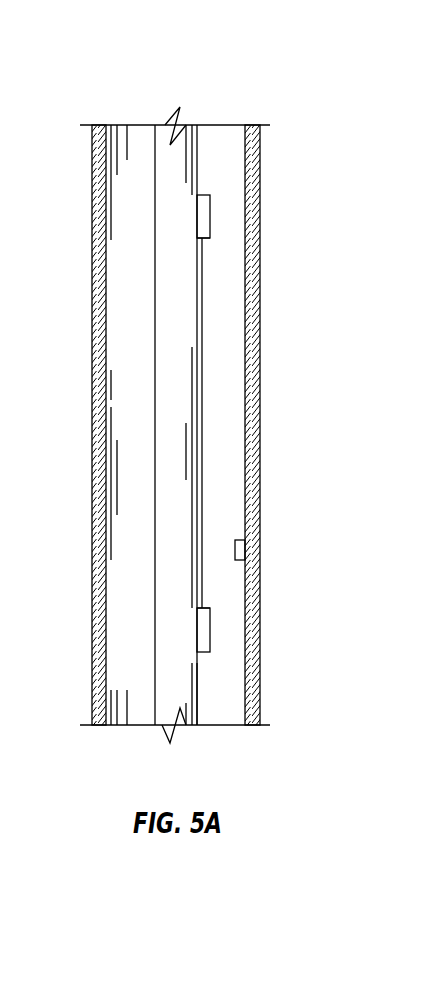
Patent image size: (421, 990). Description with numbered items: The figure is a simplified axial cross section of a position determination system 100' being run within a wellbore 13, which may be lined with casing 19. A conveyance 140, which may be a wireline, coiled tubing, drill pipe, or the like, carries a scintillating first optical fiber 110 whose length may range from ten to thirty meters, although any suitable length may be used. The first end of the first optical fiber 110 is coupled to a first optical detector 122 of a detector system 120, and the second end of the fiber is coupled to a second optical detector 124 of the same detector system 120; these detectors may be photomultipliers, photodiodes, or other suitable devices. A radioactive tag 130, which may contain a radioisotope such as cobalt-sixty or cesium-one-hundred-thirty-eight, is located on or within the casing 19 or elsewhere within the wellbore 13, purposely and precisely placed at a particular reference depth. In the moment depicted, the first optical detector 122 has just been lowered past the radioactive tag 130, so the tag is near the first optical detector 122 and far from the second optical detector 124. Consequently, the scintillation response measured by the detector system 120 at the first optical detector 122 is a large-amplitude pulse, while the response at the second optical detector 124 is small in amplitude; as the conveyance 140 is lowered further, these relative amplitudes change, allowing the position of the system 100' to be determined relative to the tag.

The position determination system 100' is at (190, 387).
The wellbore 13 is at (143, 139).
The casing 19 is at (92, 345).
The first optical fiber 110 is at (204, 434).
The detector system 120 is at (210, 210).
The first optical detector 122 is at (208, 608).
The second optical detector 124 is at (210, 238).
The radioactive tag 130 is at (247, 552).
The conveyance 140 is at (200, 683).